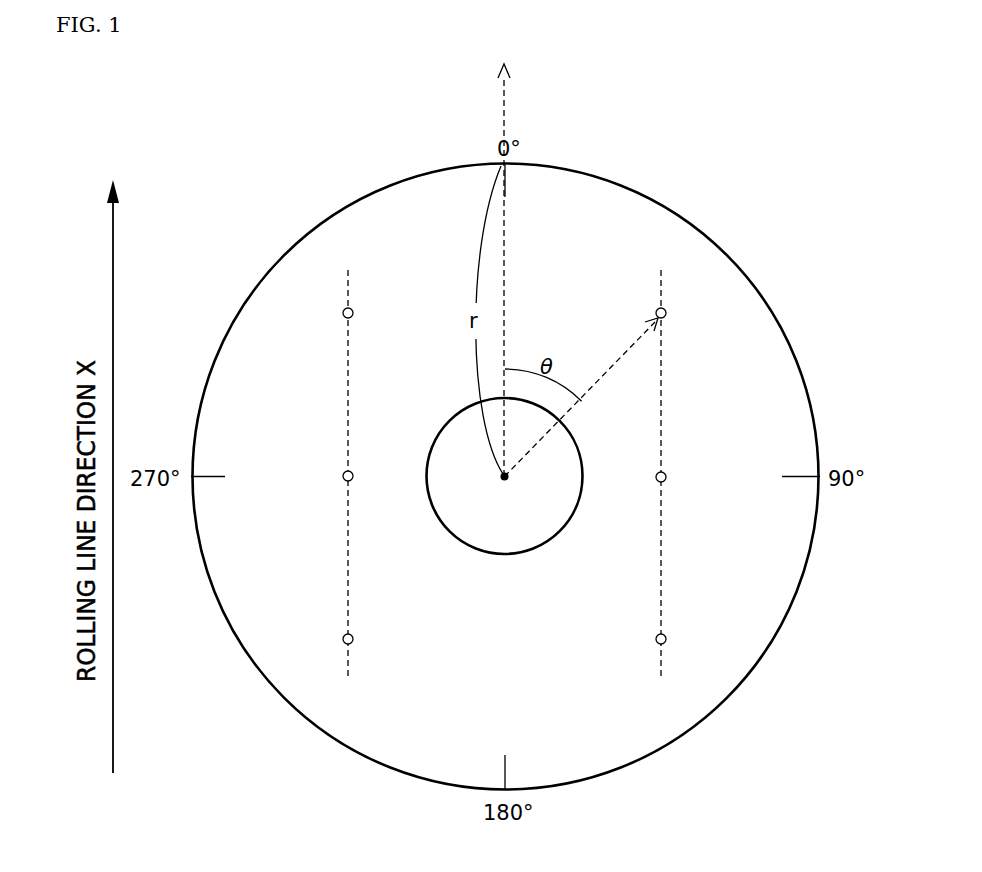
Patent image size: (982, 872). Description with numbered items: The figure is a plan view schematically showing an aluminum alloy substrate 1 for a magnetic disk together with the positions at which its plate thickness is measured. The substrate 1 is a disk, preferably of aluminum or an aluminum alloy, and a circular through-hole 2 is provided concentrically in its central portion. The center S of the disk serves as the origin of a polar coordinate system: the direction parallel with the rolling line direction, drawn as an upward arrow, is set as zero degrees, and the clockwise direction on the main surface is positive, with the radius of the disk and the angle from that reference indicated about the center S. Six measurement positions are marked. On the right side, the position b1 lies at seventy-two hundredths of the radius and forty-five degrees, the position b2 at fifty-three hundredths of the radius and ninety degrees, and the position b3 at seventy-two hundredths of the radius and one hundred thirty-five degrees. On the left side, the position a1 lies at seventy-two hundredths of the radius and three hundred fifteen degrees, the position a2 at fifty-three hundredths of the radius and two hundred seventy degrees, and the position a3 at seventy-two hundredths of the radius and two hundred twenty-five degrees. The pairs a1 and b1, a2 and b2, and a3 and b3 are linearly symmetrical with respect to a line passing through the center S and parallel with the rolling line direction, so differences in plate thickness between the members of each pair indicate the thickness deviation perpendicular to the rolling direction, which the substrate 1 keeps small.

The aluminum alloy substrate for magnetic disk 1 is at (741, 230).
The circular through-hole 2 is at (477, 520).
The center of the disk S is at (507, 479).
The position a1 is at (364, 315).
The position a2 is at (364, 478).
The position a3 is at (364, 641).
The position b1 is at (677, 315).
The position b2 is at (677, 479).
The position b3 is at (677, 641).